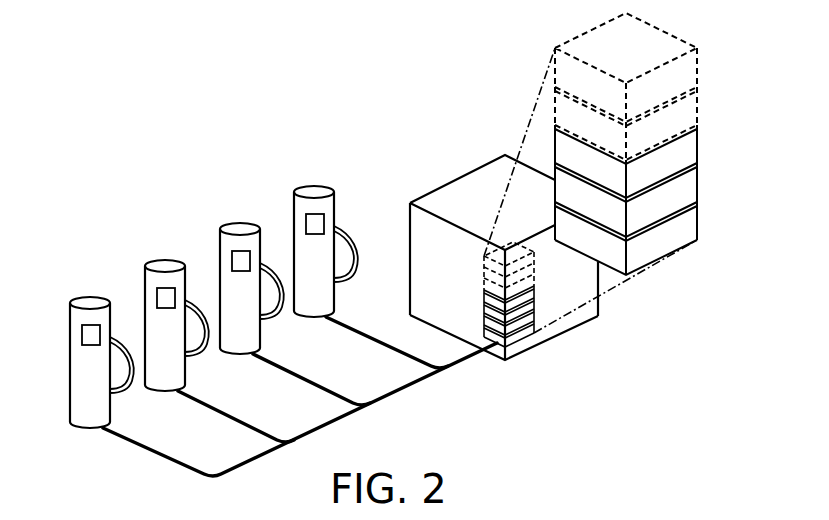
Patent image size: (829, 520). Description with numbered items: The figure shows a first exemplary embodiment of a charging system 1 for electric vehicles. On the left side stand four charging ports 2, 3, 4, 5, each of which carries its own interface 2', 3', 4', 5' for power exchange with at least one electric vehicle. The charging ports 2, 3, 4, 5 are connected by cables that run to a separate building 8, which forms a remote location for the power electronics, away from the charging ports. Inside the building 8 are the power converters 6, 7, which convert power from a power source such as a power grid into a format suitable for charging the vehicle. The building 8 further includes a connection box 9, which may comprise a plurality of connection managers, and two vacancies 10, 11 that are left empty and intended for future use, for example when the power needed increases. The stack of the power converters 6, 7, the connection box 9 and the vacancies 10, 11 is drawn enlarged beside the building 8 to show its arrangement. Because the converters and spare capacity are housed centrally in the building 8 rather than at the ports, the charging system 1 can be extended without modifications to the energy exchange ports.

The charging system 1 is at (148, 161).
The charging port 2 is at (90, 341).
The interface 2' is at (122, 336).
The charging port 3 is at (165, 304).
The interface 3' is at (198, 300).
The charging port 4 is at (240, 267).
The interface 4' is at (272, 264).
The charging port 5 is at (314, 231).
The interface 5' is at (347, 227).
The power converter 6 is at (690, 225).
The power converter 7 is at (690, 185).
The separate building 8 is at (458, 200).
The connection box 9 is at (690, 147).
The vacancy 10 is at (690, 108).
The vacancy 11 is at (690, 70).